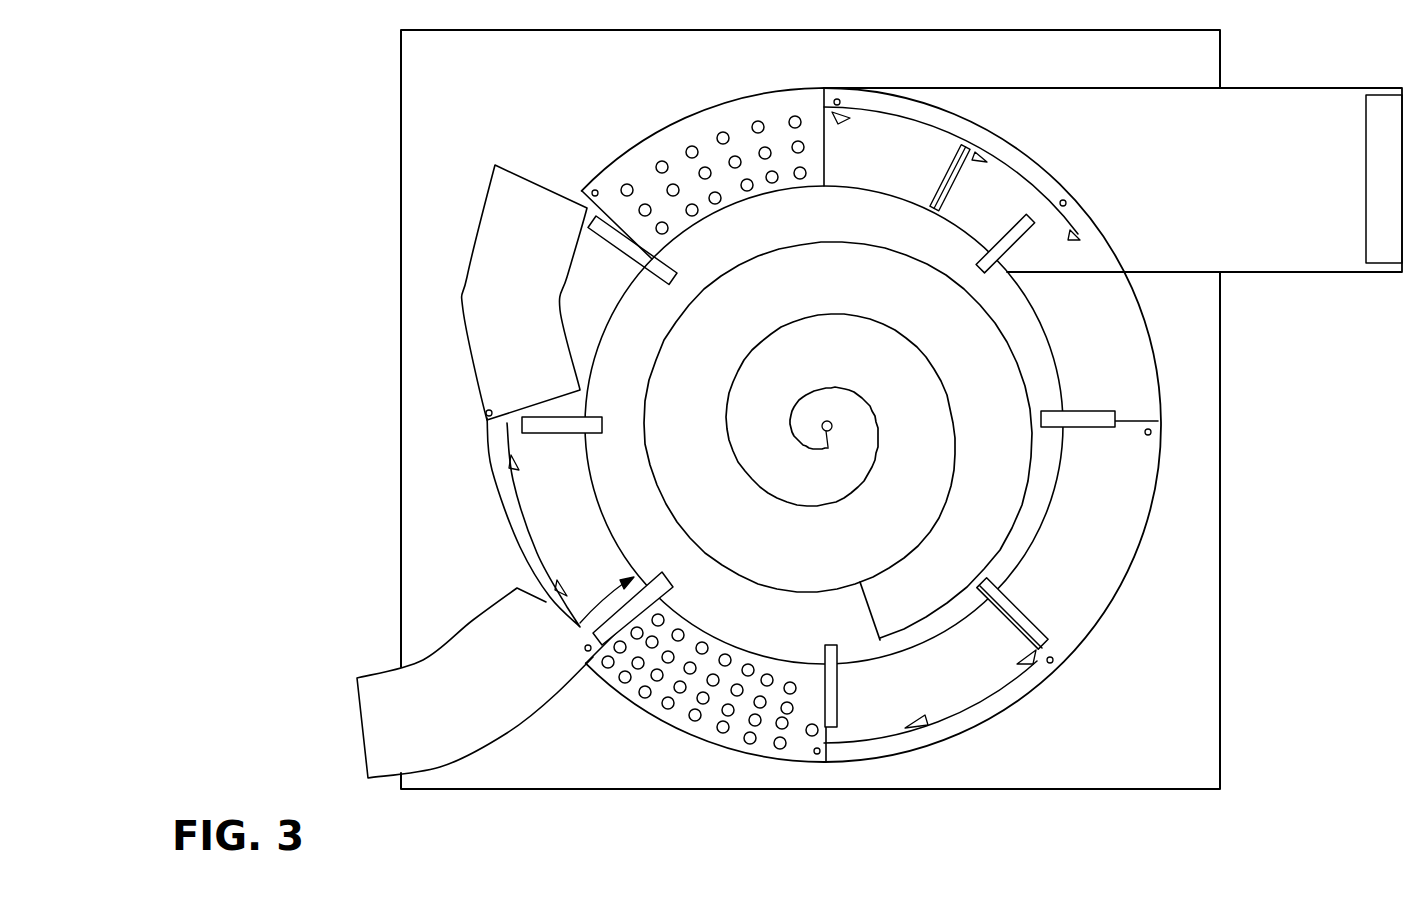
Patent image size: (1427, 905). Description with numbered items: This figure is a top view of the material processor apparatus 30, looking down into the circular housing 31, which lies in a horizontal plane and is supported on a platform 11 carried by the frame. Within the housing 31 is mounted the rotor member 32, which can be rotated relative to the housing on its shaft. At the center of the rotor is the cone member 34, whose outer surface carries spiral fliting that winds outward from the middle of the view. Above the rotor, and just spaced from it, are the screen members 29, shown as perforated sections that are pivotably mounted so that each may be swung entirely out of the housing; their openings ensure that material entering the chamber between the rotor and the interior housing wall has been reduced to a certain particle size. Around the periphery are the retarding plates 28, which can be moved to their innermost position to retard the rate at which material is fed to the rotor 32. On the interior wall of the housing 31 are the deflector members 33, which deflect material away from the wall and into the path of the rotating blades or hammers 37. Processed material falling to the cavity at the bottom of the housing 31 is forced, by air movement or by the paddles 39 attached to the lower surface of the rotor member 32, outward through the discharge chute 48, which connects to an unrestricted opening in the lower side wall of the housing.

The platform 11 is at (1218, 500).
The retarding plates 28 is at (468, 310).
The screen members 29 is at (663, 142).
The apparatus 30 is at (384, 204).
The circular housing 31 is at (497, 463).
The rotor member 32 is at (575, 622).
The deflector members 33 is at (1077, 233).
The cone member 34 is at (678, 453).
The blades or hammers 37 is at (1010, 226).
The paddles 39 is at (937, 190).
The discharge chute 48 is at (1328, 267).